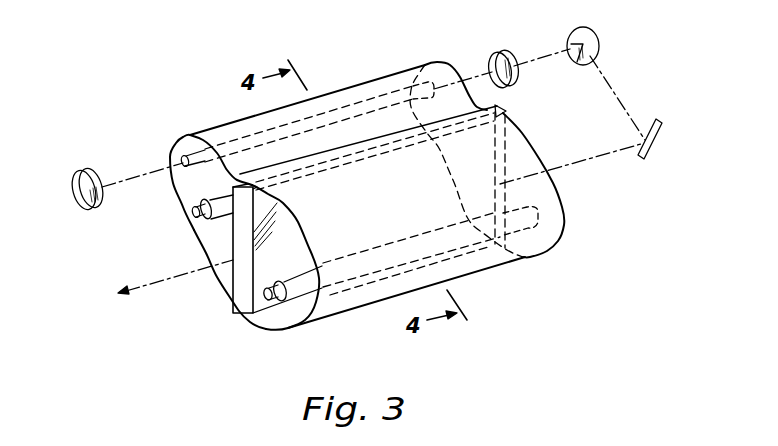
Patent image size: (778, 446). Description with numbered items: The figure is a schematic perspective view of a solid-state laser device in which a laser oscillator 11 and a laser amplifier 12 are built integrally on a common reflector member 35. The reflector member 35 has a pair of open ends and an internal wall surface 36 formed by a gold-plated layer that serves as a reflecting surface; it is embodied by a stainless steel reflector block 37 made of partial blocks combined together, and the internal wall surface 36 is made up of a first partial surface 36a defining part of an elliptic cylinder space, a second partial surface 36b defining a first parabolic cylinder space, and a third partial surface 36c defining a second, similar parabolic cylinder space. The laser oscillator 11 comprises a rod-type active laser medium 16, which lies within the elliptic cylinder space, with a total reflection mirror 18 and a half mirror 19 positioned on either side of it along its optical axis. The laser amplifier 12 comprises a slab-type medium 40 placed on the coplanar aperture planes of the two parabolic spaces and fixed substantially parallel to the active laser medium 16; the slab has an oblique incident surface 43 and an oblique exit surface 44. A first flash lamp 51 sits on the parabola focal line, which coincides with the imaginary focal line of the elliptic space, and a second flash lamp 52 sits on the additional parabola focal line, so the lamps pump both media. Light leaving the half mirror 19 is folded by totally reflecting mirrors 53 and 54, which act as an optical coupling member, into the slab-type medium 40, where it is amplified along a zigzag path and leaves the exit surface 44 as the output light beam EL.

The laser oscillator 11 is at (381, 56).
The laser amplifier 12 is at (510, 281).
The active laser medium 16 is at (200, 157).
The total reflection mirror 18 is at (83, 170).
The half mirror 19 is at (503, 50).
The reflector member 35 is at (376, 324).
The internal wall surface 36 is at (553, 233).
The first partial surface 36a is at (180, 183).
The second partial surface 36b is at (223, 280).
The third partial surface 36c is at (290, 325).
The reflector block 37 is at (468, 284).
The slab-type medium 40 is at (260, 280).
The incident surface 43 is at (537, 140).
The exit surface 44 is at (240, 292).
The first flash lamp 51 is at (195, 220).
The second flash lamp 52 is at (292, 285).
The mirror 53 is at (597, 31).
The mirror 54 is at (660, 118).
The exit light beam EL is at (147, 283).